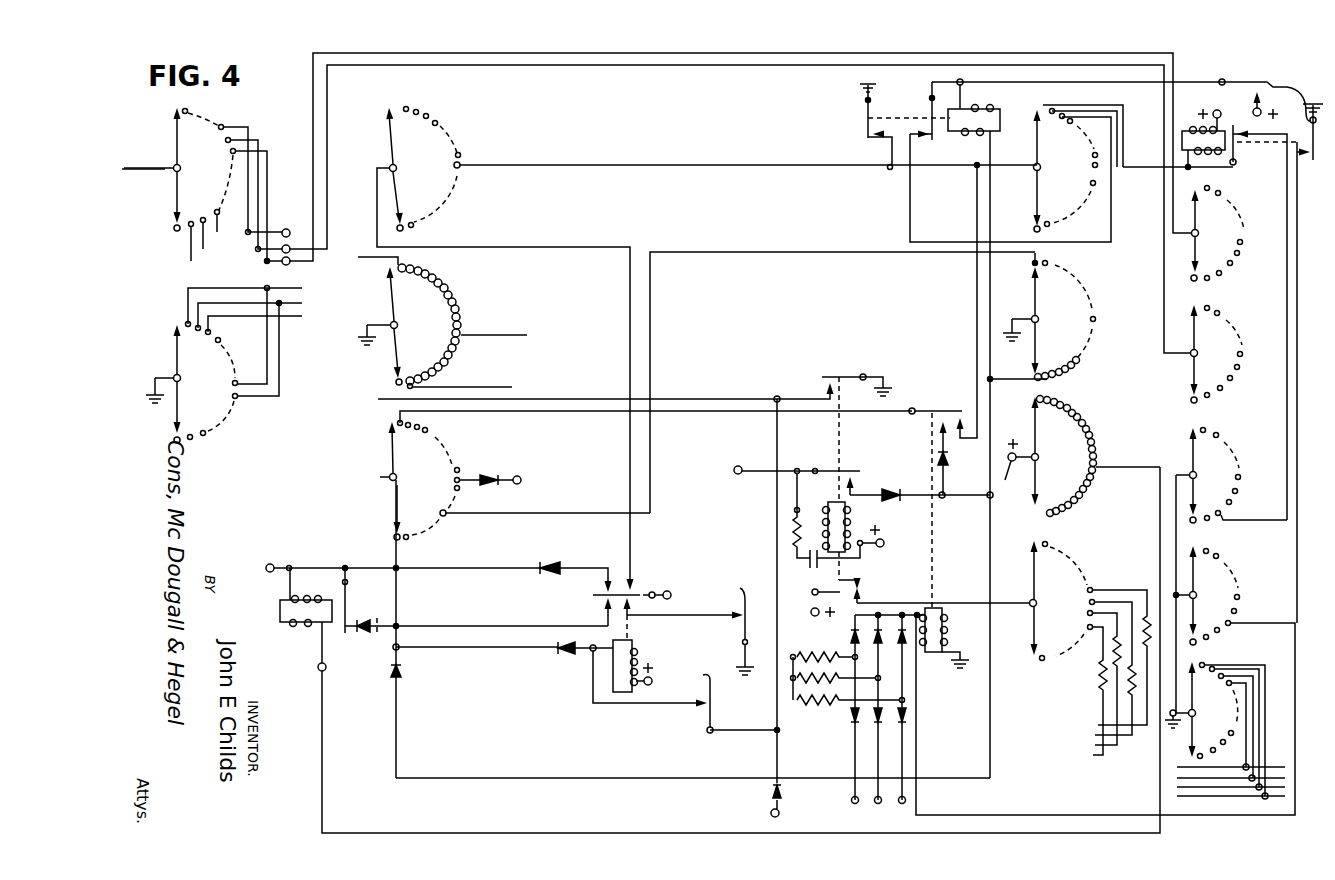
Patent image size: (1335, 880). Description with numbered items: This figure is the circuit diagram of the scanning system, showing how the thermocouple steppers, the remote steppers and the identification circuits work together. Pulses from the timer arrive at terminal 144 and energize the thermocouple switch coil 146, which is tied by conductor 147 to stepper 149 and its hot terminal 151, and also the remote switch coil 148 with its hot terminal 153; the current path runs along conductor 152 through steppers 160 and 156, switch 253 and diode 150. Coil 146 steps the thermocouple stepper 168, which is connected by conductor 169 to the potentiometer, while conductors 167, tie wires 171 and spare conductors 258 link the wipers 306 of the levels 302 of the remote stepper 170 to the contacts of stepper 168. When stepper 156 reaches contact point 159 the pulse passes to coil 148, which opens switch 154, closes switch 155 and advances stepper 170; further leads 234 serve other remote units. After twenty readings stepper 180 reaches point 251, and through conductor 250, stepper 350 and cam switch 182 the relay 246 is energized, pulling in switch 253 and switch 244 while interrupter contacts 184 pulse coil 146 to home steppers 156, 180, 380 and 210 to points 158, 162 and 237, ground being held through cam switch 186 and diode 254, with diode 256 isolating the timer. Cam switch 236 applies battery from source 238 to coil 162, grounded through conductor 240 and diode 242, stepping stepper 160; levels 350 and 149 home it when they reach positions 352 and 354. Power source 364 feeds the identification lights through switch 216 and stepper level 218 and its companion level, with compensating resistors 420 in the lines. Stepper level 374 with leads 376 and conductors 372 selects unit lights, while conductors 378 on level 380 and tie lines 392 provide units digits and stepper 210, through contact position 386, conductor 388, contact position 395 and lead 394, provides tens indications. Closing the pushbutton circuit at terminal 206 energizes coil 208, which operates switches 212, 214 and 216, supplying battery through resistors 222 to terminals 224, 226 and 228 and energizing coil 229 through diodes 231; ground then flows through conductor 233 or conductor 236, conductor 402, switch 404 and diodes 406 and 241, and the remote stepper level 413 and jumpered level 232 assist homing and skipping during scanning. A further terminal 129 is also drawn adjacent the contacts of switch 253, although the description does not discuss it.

The conductors 167 is at (327, 85).
The thermocouple stepper 168 is at (180, 169).
The conductor 169 is at (162, 172).
The tie wires 171 is at (267, 180).
The conductors 258 is at (291, 229).
The stepper 156 is at (437, 189).
The point 158 is at (414, 227).
The contact point 159 is at (461, 158).
The conductor 152 is at (750, 165).
The coil 162 is at (983, 109).
The conductor 240 is at (978, 216).
The stepper 160 is at (1066, 171).
The leads 234 is at (1105, 107).
The remote switch coil 148 is at (1182, 138).
The hot terminal 153 is at (1214, 109).
The switch 154 is at (1237, 152).
The cam switch 236 is at (1248, 82).
The switch 155 is at (1302, 92).
The source 238 is at (1278, 105).
The levels 302 is at (1249, 226).
The wipers 306 is at (1212, 225).
The stepper 170 is at (1222, 294).
The stepper level 232 is at (1231, 571).
The remote stepper level 413 is at (1207, 595).
The leads 376 is at (1228, 668).
The stepper level 374 is at (1199, 710).
The conductors 372 is at (1183, 788).
The compensating resistors 420 is at (1150, 615).
The stepper 350 is at (1042, 317).
The position 352 is at (1082, 366).
The stepper 149 is at (1043, 451).
The hot terminal 151 is at (1012, 477).
The position 354 is at (1080, 508).
The conductor 250 is at (707, 252).
The switch 404 is at (935, 401).
The conductor 402 is at (572, 412).
The switch 212 is at (822, 378).
The terminal 206 is at (738, 475).
The switch 214 is at (860, 483).
The coil 208 is at (829, 505).
The diode 241 is at (889, 503).
The diode 406 is at (947, 466).
The switch 216 is at (862, 589).
The stepper level 218 is at (976, 601).
The power source 364 is at (812, 616).
The coil 229 is at (942, 613).
The diodes 231 is at (905, 648).
The resistors 222 is at (832, 705).
The terminal 224 is at (850, 803).
The terminal 226 is at (877, 805).
The terminal 228 is at (905, 800).
The diode 256 is at (770, 794).
The cam switch 182 is at (707, 690).
The relay 246 is at (636, 660).
The diode 254 is at (572, 656).
The diode 150 is at (552, 566).
The switch 253 is at (641, 594).
The switch 244 is at (588, 600).
The terminal 129 is at (675, 602).
The cam switch 186 is at (741, 602).
The terminal 144 is at (272, 565).
The thermocouple switch coil 146 is at (333, 600).
The conductor 147 is at (320, 766).
The interrupter contacts 184 is at (371, 622).
The conductor 233 is at (400, 610).
The diode 242 is at (402, 677).
The point 237 is at (394, 537).
The stepper 180 is at (437, 489).
The point of connection 251 is at (447, 518).
The conductors 378 is at (245, 317).
The tie lines 392 is at (267, 343).
The stepper level 380 is at (218, 389).
The stepper 210 is at (398, 317).
The contact position 386 is at (460, 334).
The conductor 388 is at (515, 334).
The contact position 395 is at (411, 382).
The lead 394 is at (463, 387).